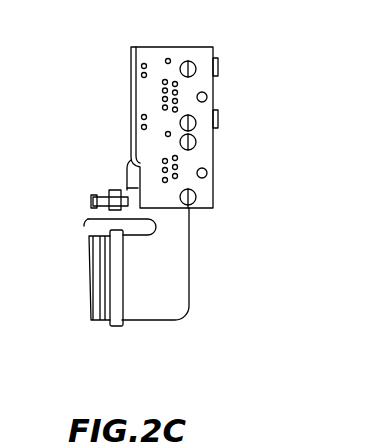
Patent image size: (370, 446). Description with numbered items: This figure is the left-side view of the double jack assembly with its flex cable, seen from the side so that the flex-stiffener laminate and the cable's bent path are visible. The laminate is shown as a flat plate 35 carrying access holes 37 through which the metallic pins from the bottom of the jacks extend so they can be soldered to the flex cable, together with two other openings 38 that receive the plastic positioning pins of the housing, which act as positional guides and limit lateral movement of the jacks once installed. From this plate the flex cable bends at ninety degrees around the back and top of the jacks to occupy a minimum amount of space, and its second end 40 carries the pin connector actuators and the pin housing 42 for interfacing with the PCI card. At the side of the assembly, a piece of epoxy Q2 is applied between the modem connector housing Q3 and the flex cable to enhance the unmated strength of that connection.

The mounting plate 35 is at (200, 152).
The access holes 37 is at (162, 165).
The openings 38 is at (207, 97).
The second end of the flex cable 40 is at (178, 282).
The pin housing 42 is at (100, 323).
The piece of epoxy Q2 is at (118, 191).
The modem connector housing Q3 is at (95, 208).